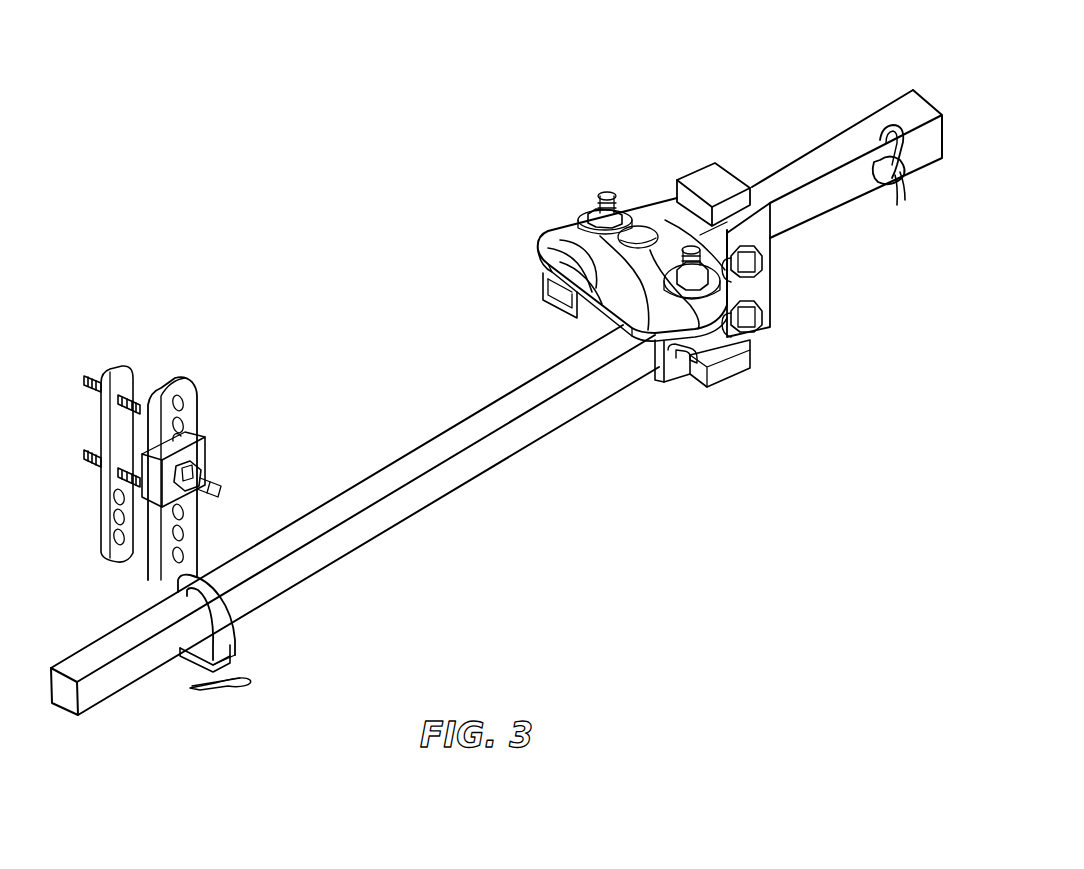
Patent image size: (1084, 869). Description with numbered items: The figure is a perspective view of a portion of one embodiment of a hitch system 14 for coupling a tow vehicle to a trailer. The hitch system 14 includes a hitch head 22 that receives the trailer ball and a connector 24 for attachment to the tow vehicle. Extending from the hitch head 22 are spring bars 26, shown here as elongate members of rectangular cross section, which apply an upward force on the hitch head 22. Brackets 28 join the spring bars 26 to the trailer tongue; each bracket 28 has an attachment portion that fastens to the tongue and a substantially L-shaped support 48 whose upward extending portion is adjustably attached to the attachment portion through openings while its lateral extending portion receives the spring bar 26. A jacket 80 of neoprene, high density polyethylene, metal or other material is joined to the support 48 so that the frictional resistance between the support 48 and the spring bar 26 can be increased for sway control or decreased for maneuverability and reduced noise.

The hitch system 14 is at (413, 152).
The hitch head 22 is at (636, 200).
The connector 24 is at (817, 208).
The spring bars 26 is at (462, 485).
The brackets 28 is at (198, 412).
The support 48 is at (198, 537).
The jacket 80 is at (252, 633).